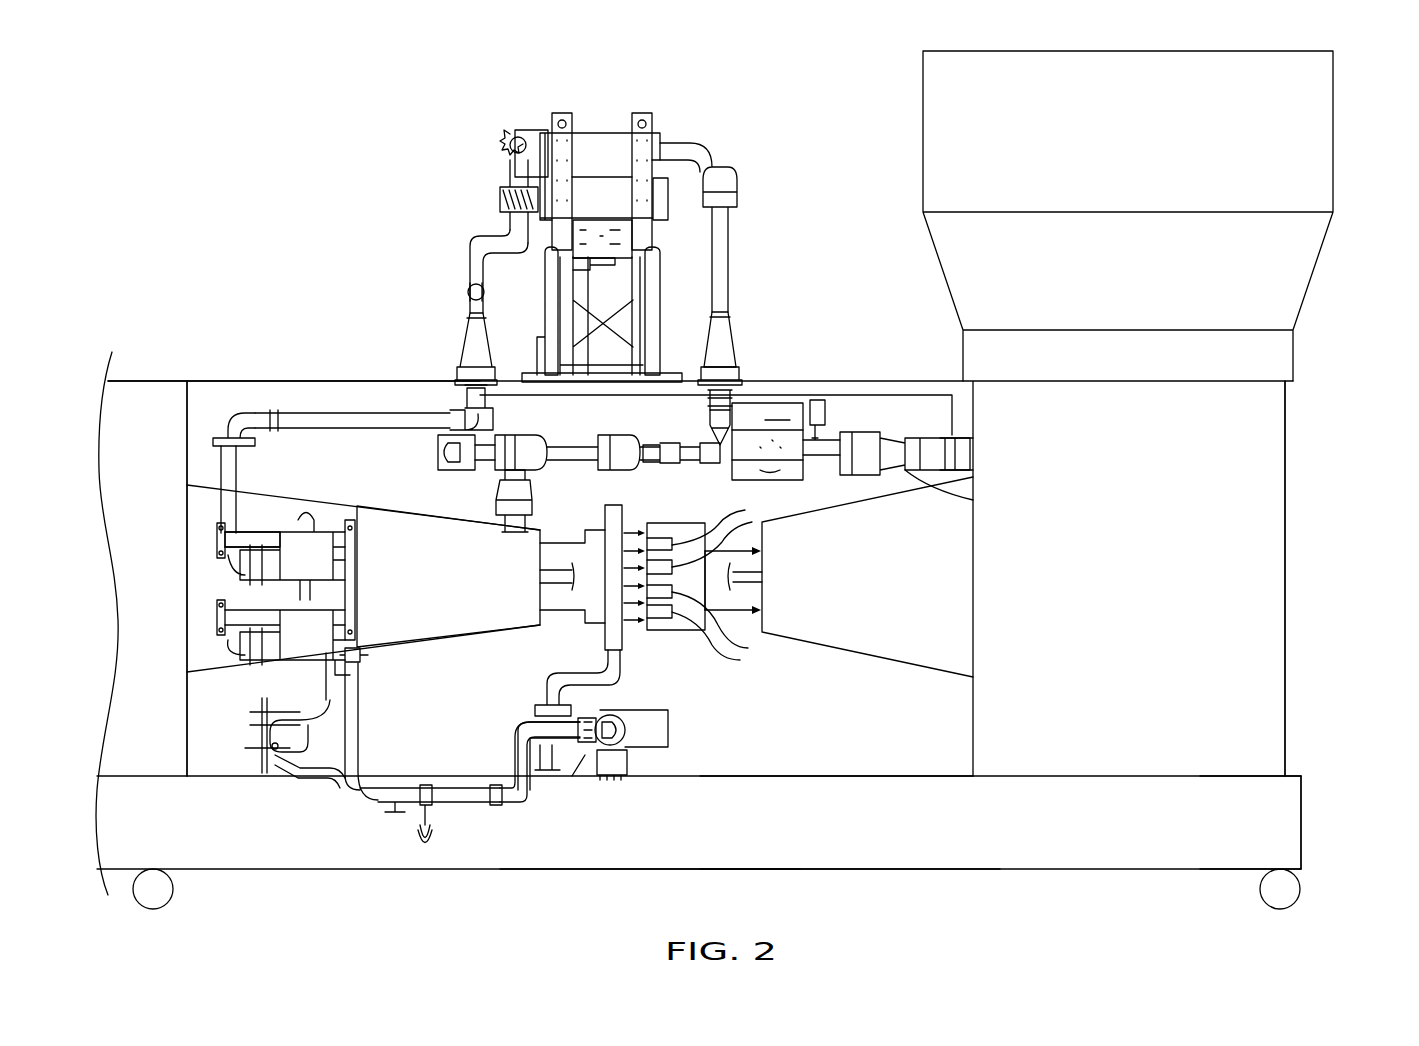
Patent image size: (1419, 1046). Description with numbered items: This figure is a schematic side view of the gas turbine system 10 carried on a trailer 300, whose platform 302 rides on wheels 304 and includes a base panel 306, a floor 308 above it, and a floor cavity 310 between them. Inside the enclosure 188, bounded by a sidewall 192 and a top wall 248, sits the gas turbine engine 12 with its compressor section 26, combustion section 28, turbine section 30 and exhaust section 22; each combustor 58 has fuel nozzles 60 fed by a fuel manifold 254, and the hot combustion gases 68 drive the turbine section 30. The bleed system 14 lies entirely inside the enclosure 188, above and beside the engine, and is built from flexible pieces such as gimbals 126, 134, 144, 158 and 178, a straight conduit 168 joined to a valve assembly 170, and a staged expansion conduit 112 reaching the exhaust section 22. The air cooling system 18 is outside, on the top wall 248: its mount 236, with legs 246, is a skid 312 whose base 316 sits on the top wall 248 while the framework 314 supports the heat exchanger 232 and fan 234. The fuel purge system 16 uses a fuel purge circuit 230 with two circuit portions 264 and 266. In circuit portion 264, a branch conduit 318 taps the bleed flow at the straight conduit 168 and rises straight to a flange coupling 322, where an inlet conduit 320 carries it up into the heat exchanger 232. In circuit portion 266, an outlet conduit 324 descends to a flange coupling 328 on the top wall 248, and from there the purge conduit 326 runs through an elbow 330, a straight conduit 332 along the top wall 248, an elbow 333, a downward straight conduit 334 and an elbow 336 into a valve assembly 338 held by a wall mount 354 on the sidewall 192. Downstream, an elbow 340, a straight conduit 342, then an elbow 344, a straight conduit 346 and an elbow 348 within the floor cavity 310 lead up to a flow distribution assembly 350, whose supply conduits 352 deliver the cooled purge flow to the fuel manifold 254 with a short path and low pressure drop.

The gas turbine system 10 is at (1363, 128).
The gas turbine engine 12 is at (1028, 590).
The bleed system 14 is at (906, 495).
The fuel purge system 16 is at (181, 439).
The air cooling system 18 is at (765, 77).
The exhaust section 22 is at (1286, 448).
The compressor section 26 is at (419, 598).
The combustion section 28 is at (727, 674).
The turbine section 30 is at (859, 604).
The combustor 58 is at (667, 636).
The fuel nozzles 60 is at (716, 579).
The hot combustion gases 68 is at (745, 610).
The staged expansion conduit 112 is at (973, 500).
The gimbal 126 is at (496, 470).
The gimbal 134 is at (530, 480).
The gimbal 144 is at (438, 452).
The gimbal 158 is at (630, 472).
The straight conduit 168 is at (688, 463).
The valve assembly 170 is at (768, 481).
The gimbal 178 is at (866, 432).
The enclosure 188 is at (148, 382).
The sidewall 192 is at (140, 750).
The fuel purge circuit 230 is at (181, 453).
The heat exchanger 232 is at (614, 160).
The fan 234 is at (595, 197).
The mount 236 is at (651, 99).
The legs 246 is at (554, 113).
The top wall 248 is at (199, 380).
The fuel manifold 254 is at (617, 652).
The circuit portion 264 is at (770, 277).
The circuit portion 266 is at (449, 297).
The trailer 300 is at (1327, 788).
The platform 302 is at (1302, 824).
The wheels 304 is at (158, 910).
The base panel 306 is at (670, 880).
The floor 308 is at (748, 771).
The floor cavity 310 is at (752, 838).
The skid 312 is at (668, 362).
The framework 314 is at (668, 268).
The base 316 is at (567, 396).
The branch conduit 318 is at (733, 390).
The inlet conduit 320 is at (741, 309).
The flange coupling 322 is at (742, 368).
The outlet conduit 324 is at (456, 243).
The purge conduit 326 is at (320, 380).
The flange coupling 328 is at (455, 376).
The elbow 330 is at (462, 413).
The straight conduit 332 is at (285, 413).
The elbow 333 is at (230, 412).
The straight conduit 334 is at (238, 470).
The elbow 336 is at (222, 565).
The valve assembly 338 is at (329, 526).
The elbow 340 is at (372, 650).
The straight conduit 342 is at (365, 725).
The elbow 344 is at (352, 800).
The straight conduit 346 is at (452, 805).
The elbow 348 is at (520, 812).
The flow distribution assembly 350 is at (635, 757).
The supply conduits 352 is at (548, 683).
The wall mount 354 is at (210, 626).